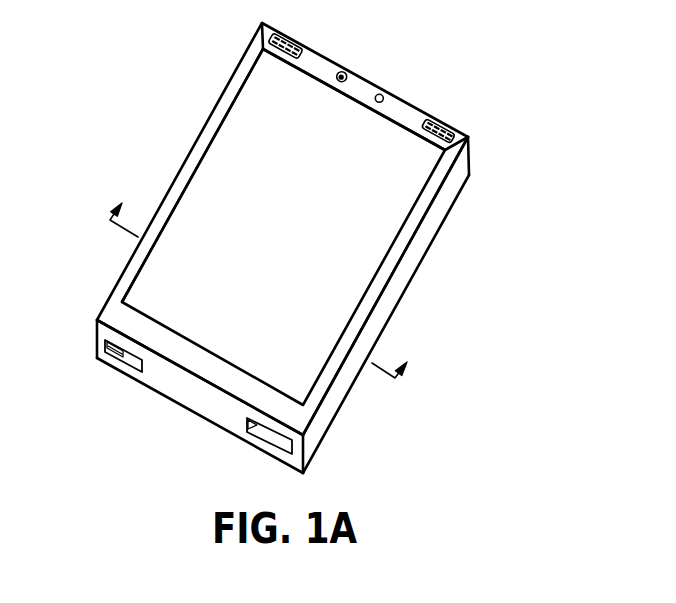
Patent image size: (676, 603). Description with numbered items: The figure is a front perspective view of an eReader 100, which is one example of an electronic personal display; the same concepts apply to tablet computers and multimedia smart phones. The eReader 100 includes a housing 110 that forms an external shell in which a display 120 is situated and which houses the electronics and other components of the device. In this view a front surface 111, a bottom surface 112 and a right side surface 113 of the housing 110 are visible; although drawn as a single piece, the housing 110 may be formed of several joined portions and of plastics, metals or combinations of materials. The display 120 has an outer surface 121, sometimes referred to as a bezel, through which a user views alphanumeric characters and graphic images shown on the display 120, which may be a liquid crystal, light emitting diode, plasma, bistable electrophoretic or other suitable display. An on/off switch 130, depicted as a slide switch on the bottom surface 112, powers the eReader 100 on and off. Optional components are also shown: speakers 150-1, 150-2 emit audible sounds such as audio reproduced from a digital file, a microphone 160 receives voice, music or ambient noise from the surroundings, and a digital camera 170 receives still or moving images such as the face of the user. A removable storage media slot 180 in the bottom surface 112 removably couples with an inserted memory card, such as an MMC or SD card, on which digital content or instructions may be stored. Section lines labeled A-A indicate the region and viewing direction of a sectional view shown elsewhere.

The eReader 100 is at (128, 112).
The housing 110 is at (471, 162).
The front surface 111 is at (408, 115).
The bottom surface 112 is at (170, 380).
The right side surface 113 is at (395, 287).
The display 120 is at (259, 32).
The outer surface 121 is at (397, 238).
The on/off switch 130 is at (104, 358).
The speaker 150-1 is at (278, 36).
The speaker 150-2 is at (438, 126).
The microphone 160 is at (344, 71).
The digital camera 170 is at (381, 94).
The removable storage media slot 180 is at (258, 428).